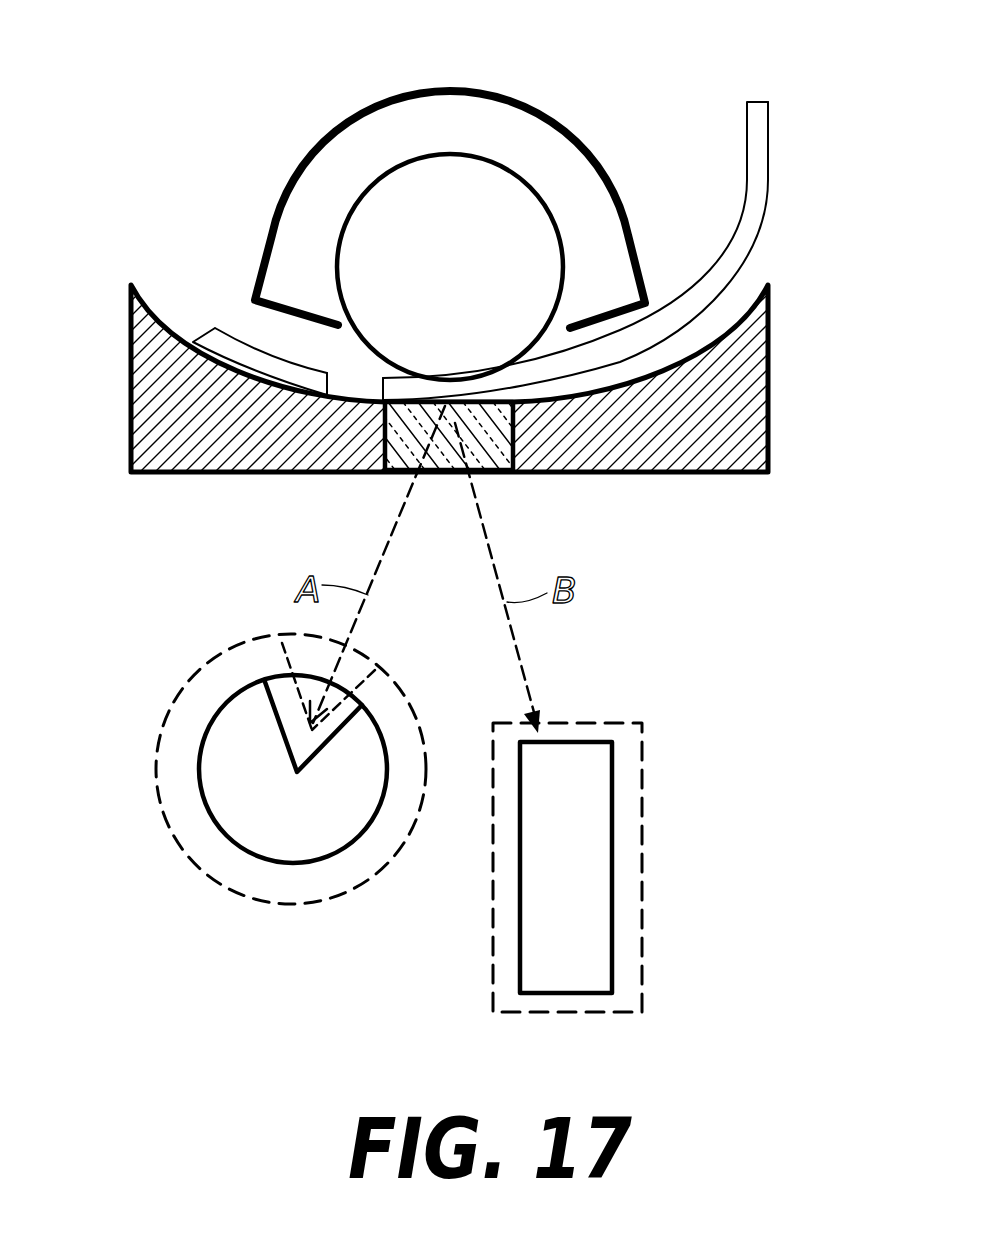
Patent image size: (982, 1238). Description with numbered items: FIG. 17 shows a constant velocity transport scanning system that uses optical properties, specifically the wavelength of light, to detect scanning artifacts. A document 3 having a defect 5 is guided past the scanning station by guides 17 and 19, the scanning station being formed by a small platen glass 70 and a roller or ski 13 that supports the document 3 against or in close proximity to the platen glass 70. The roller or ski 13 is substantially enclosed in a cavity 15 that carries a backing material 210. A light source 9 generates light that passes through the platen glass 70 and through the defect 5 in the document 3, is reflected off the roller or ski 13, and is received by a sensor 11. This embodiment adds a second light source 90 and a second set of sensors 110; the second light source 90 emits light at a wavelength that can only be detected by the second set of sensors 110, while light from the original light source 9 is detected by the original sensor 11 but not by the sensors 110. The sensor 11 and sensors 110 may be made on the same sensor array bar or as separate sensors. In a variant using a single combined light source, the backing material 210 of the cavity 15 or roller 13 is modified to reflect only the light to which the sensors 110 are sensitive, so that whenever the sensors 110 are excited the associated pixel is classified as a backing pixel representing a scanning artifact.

The document 3 is at (523, 315).
The defect 5 is at (348, 387).
The light source 9 is at (287, 863).
The sensor 11 is at (612, 925).
The roller or ski 13 is at (433, 153).
The cavity 15 is at (442, 193).
The guide 17 is at (472, 377).
The guide 19 is at (131, 352).
The platen glass 70 is at (513, 472).
The second light source 90 is at (197, 865).
The second set of sensors 110 is at (643, 853).
The backing material 210 is at (326, 144).